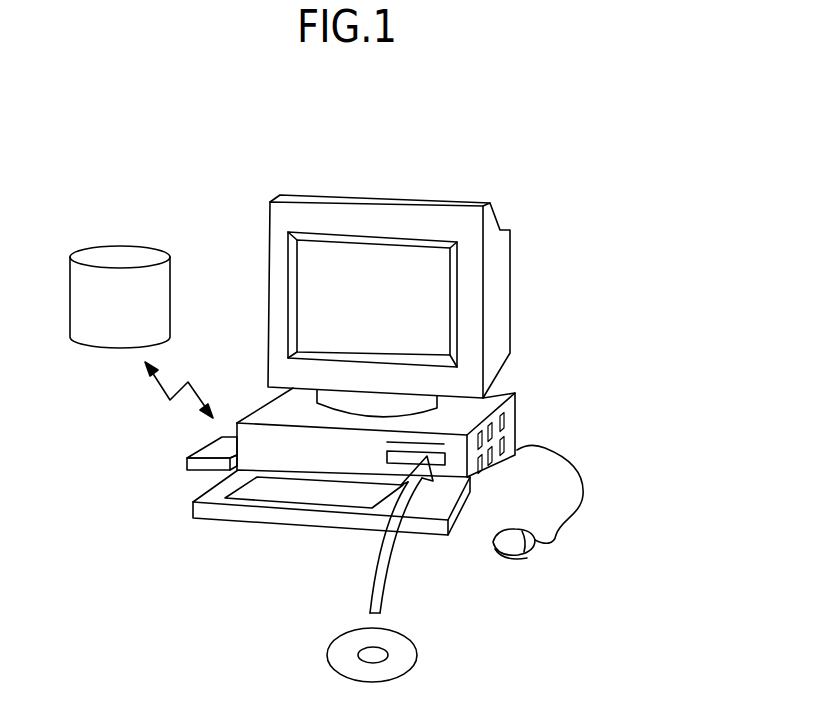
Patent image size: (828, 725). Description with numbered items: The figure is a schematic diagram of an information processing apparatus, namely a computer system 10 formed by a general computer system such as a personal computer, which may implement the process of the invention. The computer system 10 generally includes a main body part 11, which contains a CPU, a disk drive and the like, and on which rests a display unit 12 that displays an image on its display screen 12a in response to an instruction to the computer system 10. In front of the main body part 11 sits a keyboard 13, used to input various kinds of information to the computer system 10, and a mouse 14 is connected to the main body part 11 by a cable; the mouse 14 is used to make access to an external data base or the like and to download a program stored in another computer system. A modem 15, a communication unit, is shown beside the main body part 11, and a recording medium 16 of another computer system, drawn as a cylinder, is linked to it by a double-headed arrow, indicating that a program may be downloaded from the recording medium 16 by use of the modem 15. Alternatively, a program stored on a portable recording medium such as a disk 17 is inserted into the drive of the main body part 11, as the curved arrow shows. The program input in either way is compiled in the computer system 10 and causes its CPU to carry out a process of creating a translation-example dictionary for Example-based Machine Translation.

The computer system 10 is at (413, 144).
The main body part 11 is at (507, 390).
The display unit 12 is at (482, 202).
The display screen 12a is at (315, 258).
The keyboard 13 is at (200, 495).
The mouse 14 is at (512, 560).
The modem 15 is at (203, 450).
The recording medium 16 is at (152, 245).
The disk 17 is at (418, 653).